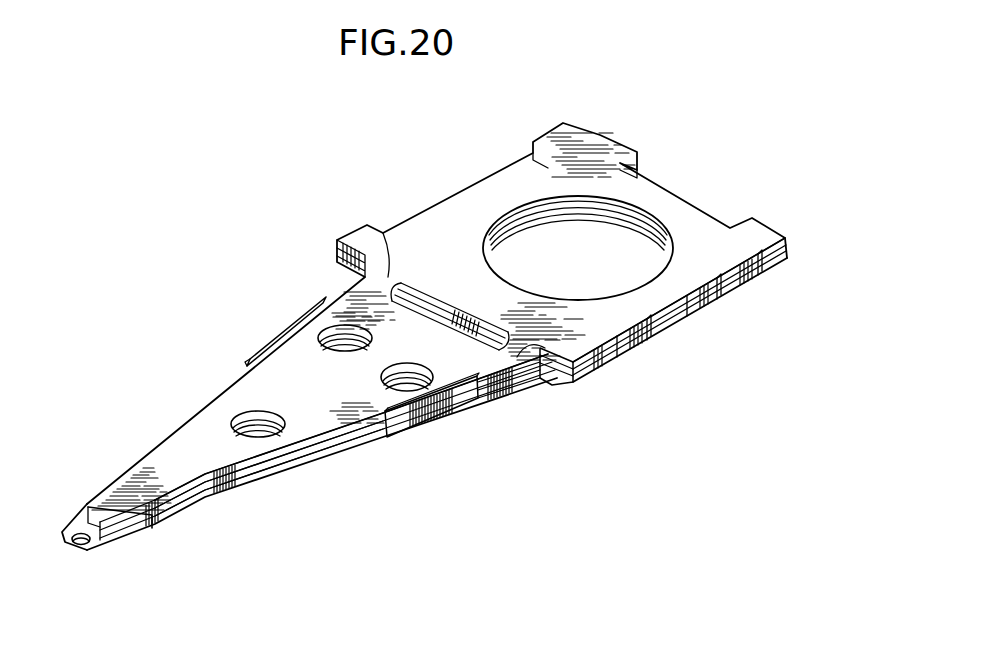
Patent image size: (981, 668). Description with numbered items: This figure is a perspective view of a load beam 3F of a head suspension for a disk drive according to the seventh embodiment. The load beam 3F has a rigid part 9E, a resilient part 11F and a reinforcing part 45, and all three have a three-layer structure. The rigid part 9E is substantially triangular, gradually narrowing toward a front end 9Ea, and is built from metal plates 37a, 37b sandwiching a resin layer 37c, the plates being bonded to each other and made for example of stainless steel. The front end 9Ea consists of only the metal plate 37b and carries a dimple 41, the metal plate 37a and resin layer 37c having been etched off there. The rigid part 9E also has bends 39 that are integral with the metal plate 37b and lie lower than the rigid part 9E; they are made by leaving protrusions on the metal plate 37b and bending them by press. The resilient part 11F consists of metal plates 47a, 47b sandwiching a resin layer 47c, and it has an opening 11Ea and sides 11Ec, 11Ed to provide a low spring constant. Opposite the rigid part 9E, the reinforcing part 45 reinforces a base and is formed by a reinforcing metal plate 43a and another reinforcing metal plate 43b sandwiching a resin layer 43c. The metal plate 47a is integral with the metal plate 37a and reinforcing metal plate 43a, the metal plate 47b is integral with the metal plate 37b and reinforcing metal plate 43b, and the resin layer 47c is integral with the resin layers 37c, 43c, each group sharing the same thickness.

The load beam 3F is at (176, 404).
The rigid part 9E is at (163, 463).
The front end 9Ea is at (83, 507).
The dimple 41 is at (80, 553).
The metal plate 37a is at (232, 496).
The metal plate 37b is at (141, 531).
The resin layer 37c is at (182, 510).
The bend 39 is at (273, 340).
The opening 11Ea is at (440, 296).
The side 11Ec is at (350, 238).
The side 11Ed is at (550, 385).
The metal plate 47a is at (545, 398).
The metal plate 47b is at (490, 402).
The resin layer 47c is at (507, 402).
The resilient part 11F is at (500, 495).
The reinforcing metal plate 43a is at (725, 348).
The reinforcing metal plate 43b is at (802, 490).
The resin layer 43c is at (688, 327).
The reinforcing part 45 is at (687, 399).